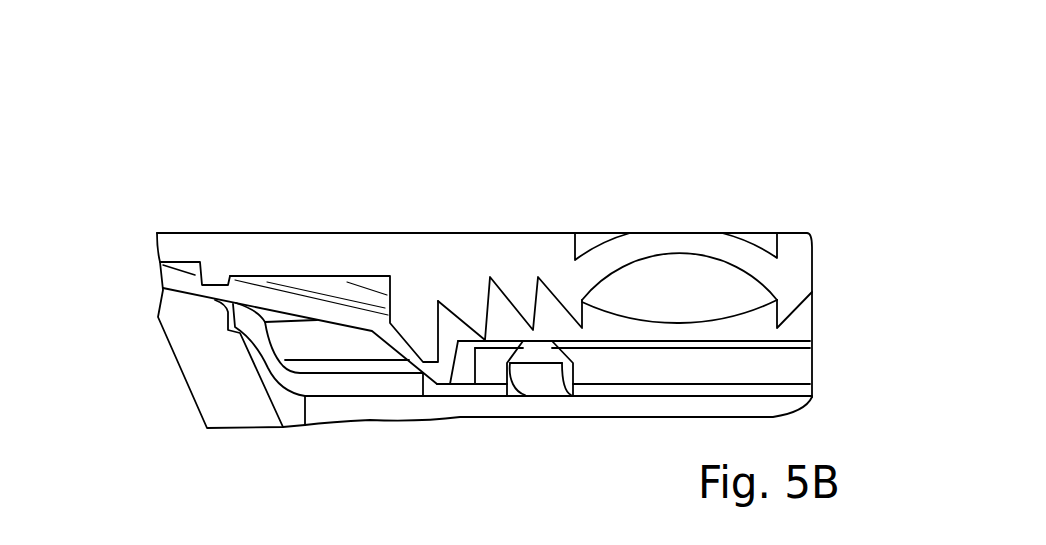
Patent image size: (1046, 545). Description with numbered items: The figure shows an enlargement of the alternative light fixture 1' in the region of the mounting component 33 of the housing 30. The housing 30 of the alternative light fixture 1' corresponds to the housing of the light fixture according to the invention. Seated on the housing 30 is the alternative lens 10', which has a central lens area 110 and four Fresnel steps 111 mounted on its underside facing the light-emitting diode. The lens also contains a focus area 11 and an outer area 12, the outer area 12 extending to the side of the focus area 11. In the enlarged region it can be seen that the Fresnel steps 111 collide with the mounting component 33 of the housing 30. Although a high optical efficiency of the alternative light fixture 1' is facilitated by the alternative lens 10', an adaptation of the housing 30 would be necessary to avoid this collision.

The alternative light fixture 1' is at (533, 215).
The alternative lens 10' is at (533, 215).
The focus area 11 is at (722, 128).
The central lens area 110 is at (673, 280).
The Fresnel steps 111 is at (413, 310).
The outer area 12 is at (297, 255).
The housing 30 is at (203, 370).
The mounting component 33 is at (542, 372).